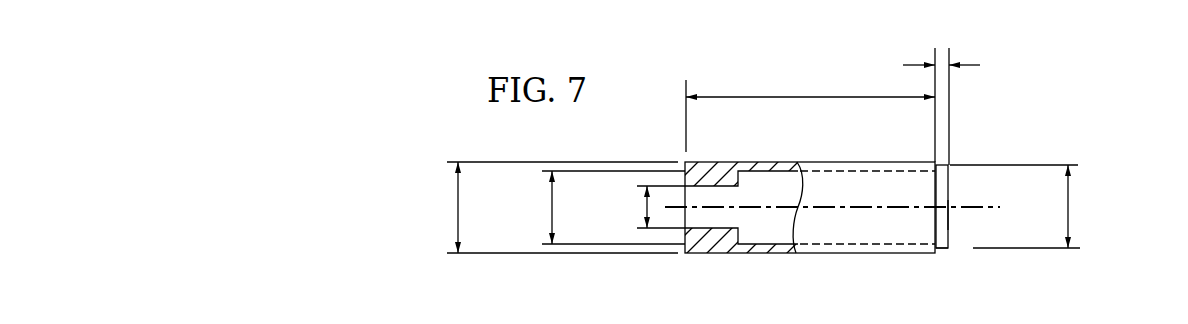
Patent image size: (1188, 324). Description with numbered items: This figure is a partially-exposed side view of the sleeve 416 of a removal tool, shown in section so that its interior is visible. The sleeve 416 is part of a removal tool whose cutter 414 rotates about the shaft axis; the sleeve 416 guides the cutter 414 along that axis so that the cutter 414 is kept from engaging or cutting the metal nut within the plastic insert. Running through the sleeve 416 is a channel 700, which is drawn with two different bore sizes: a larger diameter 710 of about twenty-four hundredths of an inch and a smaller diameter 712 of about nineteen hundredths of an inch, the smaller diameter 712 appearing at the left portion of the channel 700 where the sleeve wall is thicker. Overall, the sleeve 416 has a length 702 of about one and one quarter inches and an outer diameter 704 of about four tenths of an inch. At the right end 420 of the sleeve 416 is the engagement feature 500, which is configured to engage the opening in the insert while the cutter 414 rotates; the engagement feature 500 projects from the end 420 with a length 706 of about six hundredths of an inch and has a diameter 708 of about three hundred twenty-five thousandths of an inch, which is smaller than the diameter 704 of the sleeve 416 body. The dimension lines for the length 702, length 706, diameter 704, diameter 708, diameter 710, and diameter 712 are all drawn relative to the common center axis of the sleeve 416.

The cutter 414 is at (724, 160).
The sleeve 416 is at (949, 232).
The end 420 is at (949, 193).
The engagement feature 500 is at (949, 217).
The channel 700 is at (812, 210).
The length 702 is at (810, 96).
The diameter 704 is at (455, 205).
The length 706 is at (968, 64).
The diameter 708 is at (1072, 195).
The diameter 710 is at (548, 207).
The diameter 712 is at (644, 207).